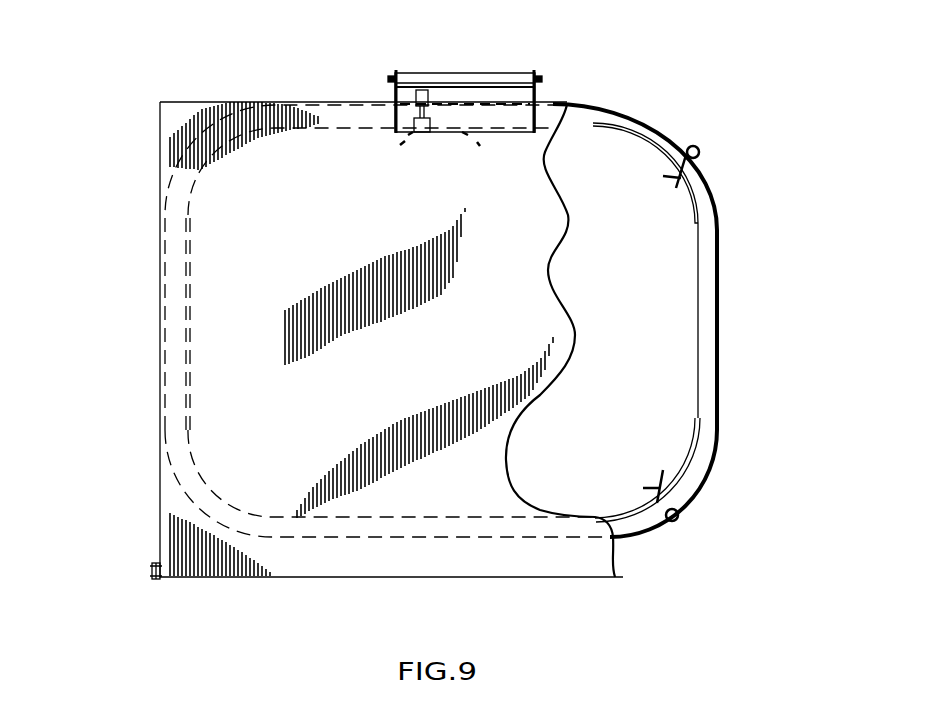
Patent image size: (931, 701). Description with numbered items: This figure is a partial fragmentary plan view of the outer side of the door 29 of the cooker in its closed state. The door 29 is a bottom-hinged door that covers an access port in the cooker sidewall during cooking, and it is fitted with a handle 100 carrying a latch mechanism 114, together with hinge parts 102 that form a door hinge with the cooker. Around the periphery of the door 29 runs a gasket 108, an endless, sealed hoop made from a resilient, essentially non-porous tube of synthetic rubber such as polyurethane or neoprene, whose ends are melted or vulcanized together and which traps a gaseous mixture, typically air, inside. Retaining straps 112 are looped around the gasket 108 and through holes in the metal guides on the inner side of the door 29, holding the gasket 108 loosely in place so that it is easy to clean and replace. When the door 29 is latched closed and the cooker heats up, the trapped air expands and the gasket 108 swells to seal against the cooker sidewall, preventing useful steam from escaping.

The door 29 is at (143, 356).
The handle 100 is at (508, 72).
The hinge parts 102 is at (150, 573).
The gasket 108 is at (712, 326).
The retaining straps 112 is at (694, 146).
The latch mechanism 114 is at (428, 92).